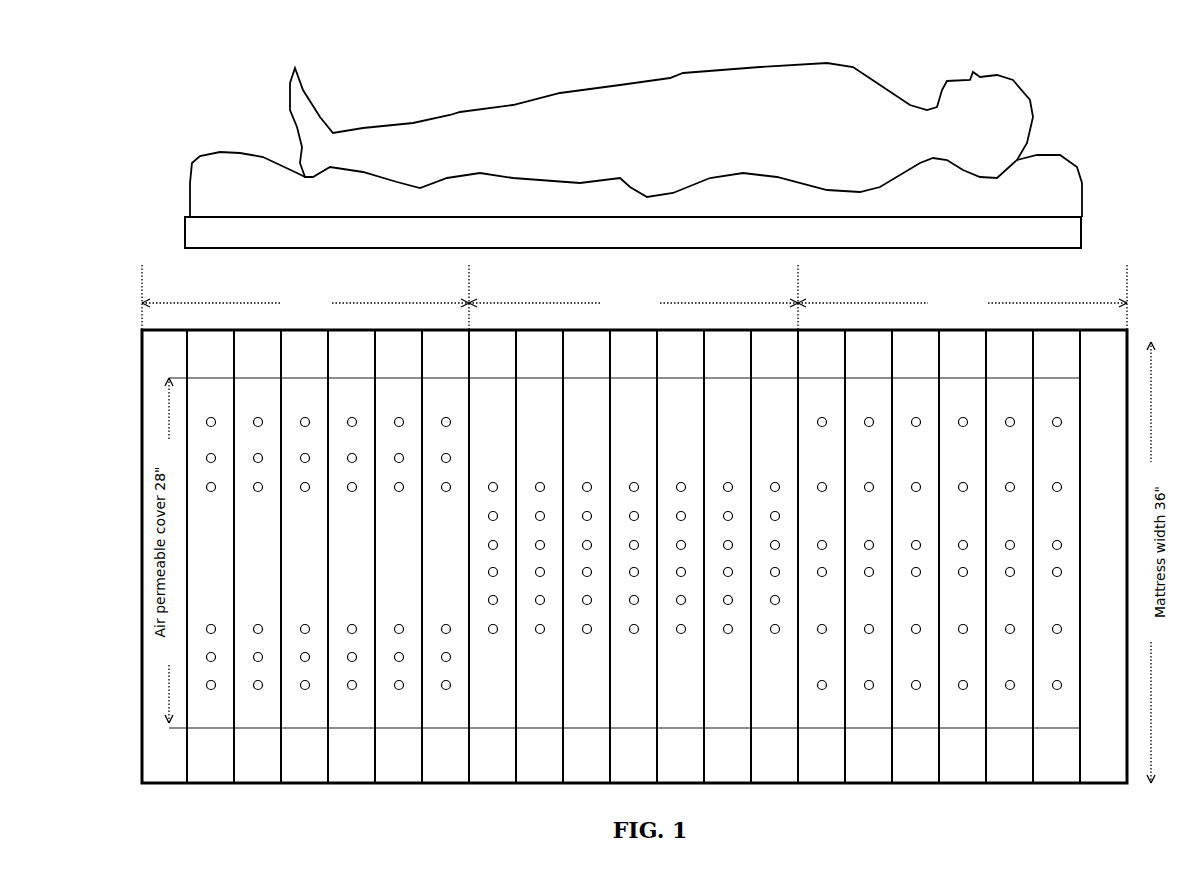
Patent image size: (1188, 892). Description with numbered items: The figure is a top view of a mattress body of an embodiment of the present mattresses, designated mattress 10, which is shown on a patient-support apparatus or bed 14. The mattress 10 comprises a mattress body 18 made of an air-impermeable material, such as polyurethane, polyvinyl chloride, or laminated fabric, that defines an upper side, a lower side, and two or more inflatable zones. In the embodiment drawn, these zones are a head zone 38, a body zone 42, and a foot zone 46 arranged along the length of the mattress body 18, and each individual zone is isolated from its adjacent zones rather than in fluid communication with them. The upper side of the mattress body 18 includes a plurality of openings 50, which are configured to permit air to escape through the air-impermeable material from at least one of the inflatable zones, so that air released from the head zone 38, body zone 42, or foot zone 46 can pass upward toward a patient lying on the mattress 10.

The mattress 10 is at (1100, 125).
The patient-support apparatus or bed 14 is at (1068, 233).
The mattress body 18 is at (1067, 182).
The head zone 38 is at (962, 524).
The body zone 42 is at (633, 524).
The foot zone 46 is at (305, 524).
The openings 50 is at (257, 690).